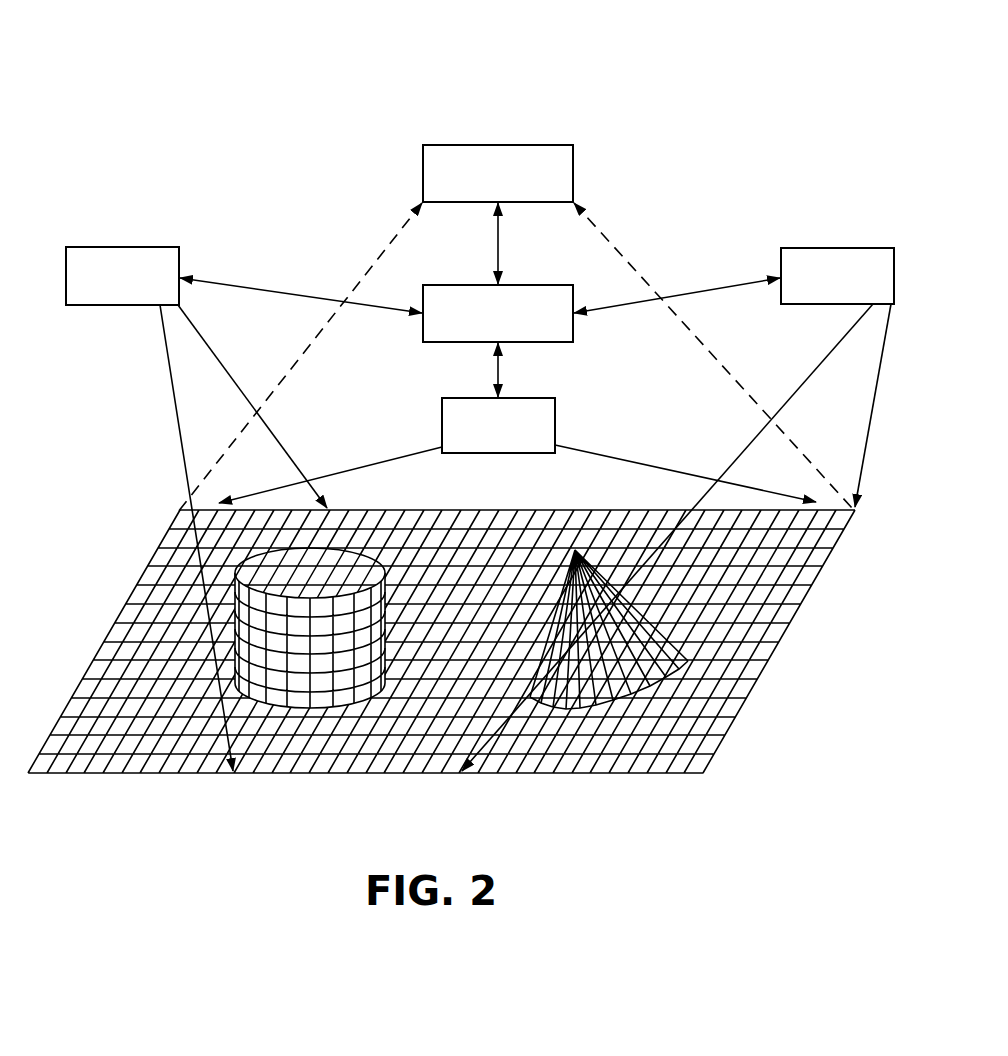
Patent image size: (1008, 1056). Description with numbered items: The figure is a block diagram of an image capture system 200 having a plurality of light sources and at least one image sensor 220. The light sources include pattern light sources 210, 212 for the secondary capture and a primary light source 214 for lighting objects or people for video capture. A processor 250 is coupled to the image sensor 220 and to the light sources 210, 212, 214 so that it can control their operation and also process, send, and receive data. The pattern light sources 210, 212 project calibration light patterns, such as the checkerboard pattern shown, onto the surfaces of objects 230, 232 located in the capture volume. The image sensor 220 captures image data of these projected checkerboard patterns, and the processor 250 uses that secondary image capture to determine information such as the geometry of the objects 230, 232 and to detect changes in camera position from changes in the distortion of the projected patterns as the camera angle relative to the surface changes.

The image capture system 200 is at (518, 58).
The pattern light source 210 is at (101, 290).
The pattern light source 212 is at (816, 290).
The primary light source 214 is at (477, 439).
The image sensor 220 is at (477, 187).
The processor 250 is at (477, 327).
The object 230 is at (289, 661).
The object 232 is at (601, 682).